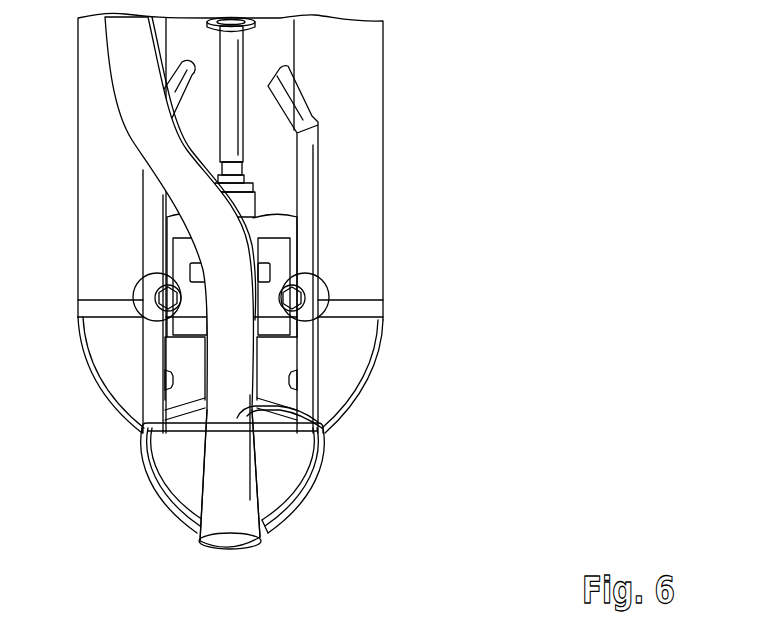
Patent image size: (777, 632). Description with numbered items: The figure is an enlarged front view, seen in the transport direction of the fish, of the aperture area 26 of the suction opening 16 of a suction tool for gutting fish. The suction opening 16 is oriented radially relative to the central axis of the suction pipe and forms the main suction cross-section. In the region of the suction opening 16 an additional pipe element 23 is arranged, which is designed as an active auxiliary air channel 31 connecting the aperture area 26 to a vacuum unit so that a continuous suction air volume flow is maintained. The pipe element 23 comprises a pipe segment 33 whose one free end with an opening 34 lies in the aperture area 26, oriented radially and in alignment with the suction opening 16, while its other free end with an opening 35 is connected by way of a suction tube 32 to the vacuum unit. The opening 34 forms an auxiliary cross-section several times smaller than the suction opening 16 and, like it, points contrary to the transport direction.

The suction opening 16 is at (200, 490).
The pipe element 23 is at (272, 466).
The aperture area 26 is at (190, 468).
The active auxiliary air channel 31 is at (243, 489).
The suction tube 32 is at (190, 190).
The pipe segment 33 is at (262, 520).
The opening 34 is at (240, 545).
The opening 35 is at (326, 432).